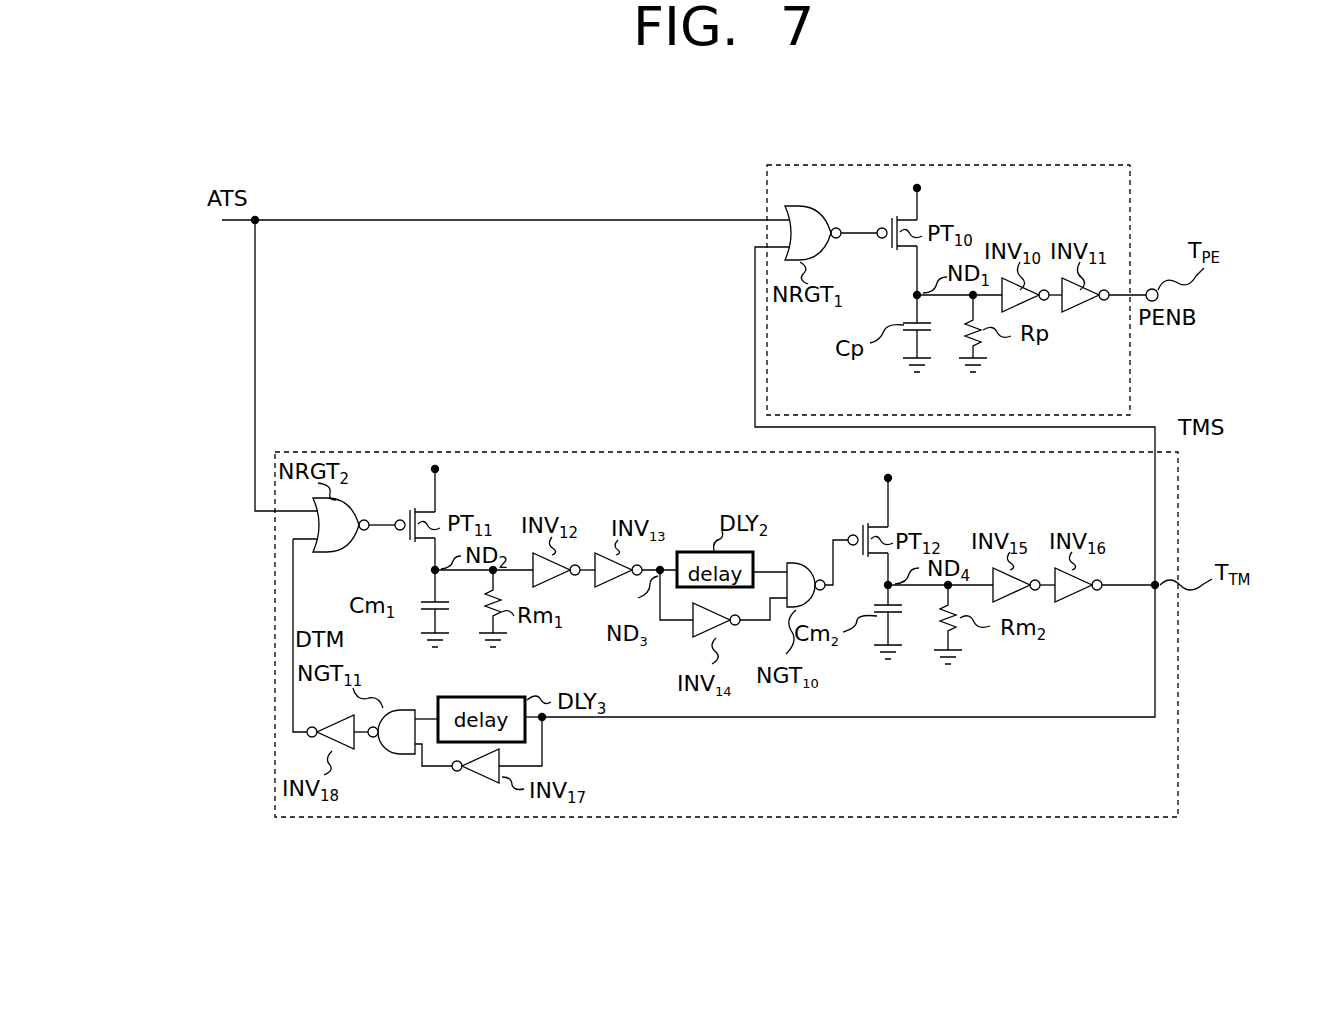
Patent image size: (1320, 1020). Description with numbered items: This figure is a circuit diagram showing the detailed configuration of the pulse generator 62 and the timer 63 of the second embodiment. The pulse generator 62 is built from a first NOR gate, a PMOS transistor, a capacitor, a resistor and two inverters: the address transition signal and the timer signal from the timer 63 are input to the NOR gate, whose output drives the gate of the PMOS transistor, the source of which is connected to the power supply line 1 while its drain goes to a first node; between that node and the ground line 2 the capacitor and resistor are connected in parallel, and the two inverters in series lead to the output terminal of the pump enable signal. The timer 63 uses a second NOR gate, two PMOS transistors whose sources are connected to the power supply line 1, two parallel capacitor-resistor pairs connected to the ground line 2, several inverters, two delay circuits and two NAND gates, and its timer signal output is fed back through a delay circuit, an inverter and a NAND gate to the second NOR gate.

The pulse generator 62 is at (964, 165).
The timer 63 is at (507, 452).
The power supply line 1 is at (920, 188).
The ground line 2 is at (901, 362).